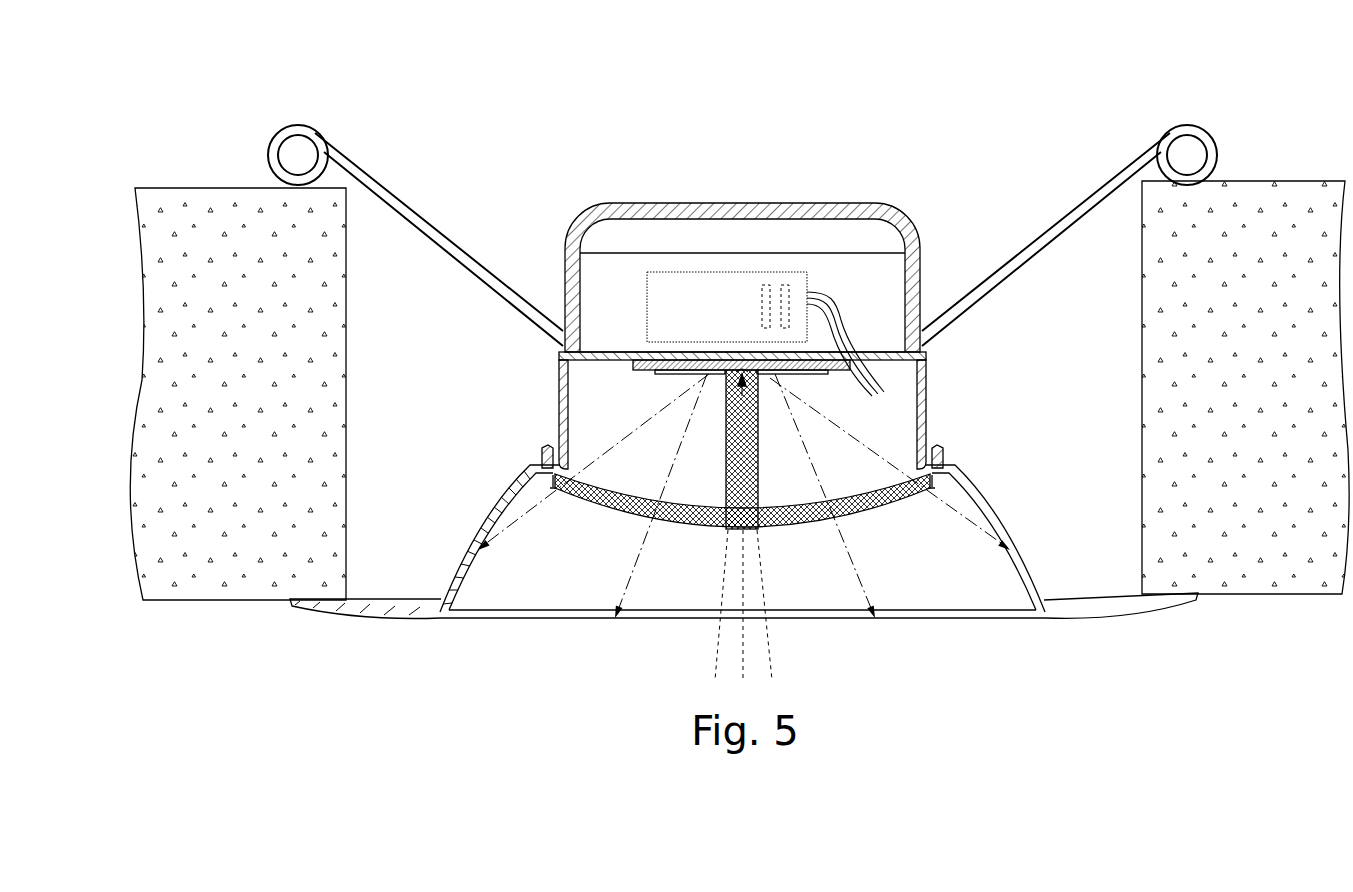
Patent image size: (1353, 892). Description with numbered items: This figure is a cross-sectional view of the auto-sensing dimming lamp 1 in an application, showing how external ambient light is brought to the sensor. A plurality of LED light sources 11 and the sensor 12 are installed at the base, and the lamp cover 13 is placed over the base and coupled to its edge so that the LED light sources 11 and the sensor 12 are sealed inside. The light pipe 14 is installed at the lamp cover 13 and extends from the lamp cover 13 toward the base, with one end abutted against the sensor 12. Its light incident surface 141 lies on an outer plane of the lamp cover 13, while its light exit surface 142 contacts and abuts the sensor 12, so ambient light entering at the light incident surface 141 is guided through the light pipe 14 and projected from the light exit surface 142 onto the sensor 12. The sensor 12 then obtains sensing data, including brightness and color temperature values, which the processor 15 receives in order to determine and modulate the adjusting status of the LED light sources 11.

The auto-sensing dimming lamp 1 is at (256, 52).
The LED light sources 11 is at (830, 375).
The sensor 12 is at (657, 373).
The lamp cover 13 is at (882, 498).
The light pipe 14 is at (749, 519).
The light incident surface 141 is at (748, 530).
The light exit surface 142 is at (760, 374).
The processor 15 is at (733, 283).